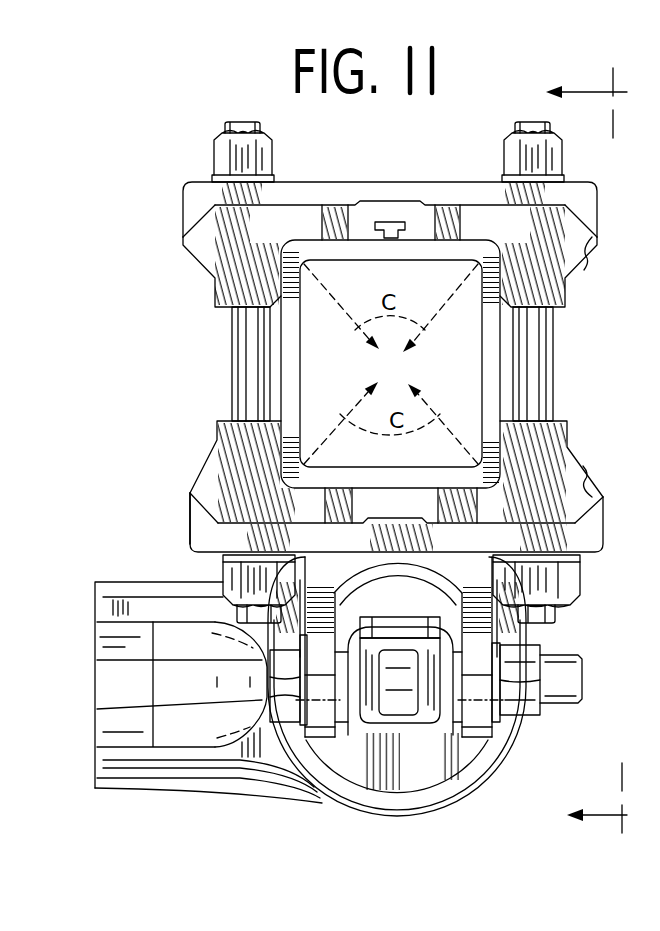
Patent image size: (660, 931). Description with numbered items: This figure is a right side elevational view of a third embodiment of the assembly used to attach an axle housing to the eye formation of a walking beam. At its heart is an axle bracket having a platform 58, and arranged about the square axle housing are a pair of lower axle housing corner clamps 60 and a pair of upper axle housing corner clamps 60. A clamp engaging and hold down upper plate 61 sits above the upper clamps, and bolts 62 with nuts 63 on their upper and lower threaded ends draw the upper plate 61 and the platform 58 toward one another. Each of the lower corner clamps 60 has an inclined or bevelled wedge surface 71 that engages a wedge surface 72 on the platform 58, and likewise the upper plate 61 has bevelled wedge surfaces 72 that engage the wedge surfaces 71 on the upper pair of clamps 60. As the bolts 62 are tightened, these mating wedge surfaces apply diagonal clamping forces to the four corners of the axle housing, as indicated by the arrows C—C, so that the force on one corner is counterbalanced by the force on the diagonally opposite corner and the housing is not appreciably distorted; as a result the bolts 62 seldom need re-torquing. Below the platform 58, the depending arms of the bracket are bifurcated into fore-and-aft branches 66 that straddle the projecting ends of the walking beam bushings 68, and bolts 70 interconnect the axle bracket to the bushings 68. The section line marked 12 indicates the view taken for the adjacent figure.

The section line 12- 12 is at (600, 456).
The platform 58 is at (189, 523).
The axle housing corner clamp 60 is at (202, 263).
The upper plate 61 is at (357, 176).
The bolt 62 is at (232, 377).
The nut 63 is at (563, 153).
The fore-and-aft branch 66 is at (482, 730).
The walking beam bushing 68 is at (398, 742).
The bolt 70 is at (583, 677).
The wedge surface 71 is at (586, 238).
The wedge surface 72 is at (582, 212).